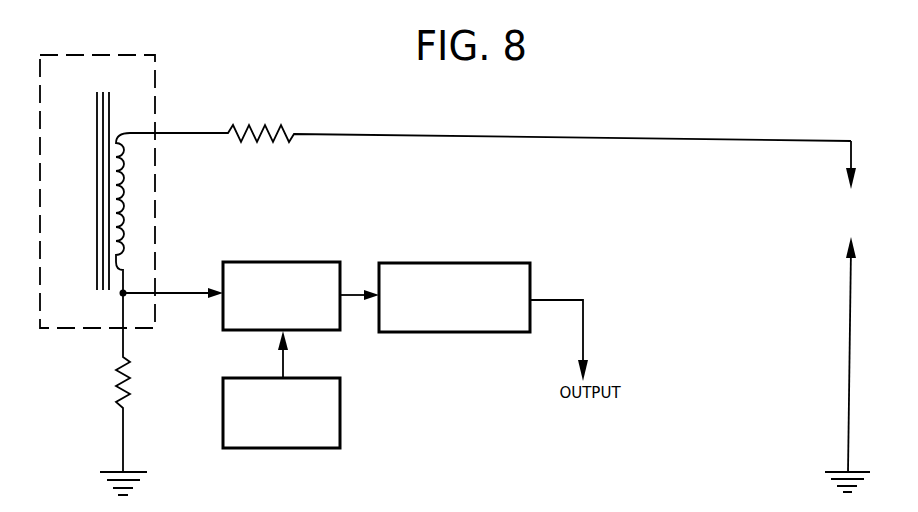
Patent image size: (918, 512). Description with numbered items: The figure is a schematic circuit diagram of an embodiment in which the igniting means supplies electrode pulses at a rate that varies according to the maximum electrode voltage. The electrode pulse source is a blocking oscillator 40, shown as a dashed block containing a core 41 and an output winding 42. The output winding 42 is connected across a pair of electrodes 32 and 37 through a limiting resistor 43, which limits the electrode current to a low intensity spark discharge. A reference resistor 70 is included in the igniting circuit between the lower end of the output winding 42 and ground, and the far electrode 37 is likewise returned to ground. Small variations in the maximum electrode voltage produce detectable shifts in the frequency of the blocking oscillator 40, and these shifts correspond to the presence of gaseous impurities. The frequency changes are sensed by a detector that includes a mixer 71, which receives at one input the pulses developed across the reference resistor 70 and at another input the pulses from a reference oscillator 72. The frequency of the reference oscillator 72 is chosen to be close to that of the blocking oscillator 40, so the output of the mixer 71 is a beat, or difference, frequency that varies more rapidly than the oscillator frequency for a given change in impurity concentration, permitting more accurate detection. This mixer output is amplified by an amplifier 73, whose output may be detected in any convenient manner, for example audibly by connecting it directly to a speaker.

The blocking oscillator 40 is at (100, 55).
The magnetic core 41 is at (121, 116).
The output winding 42 is at (134, 207).
The limiting resistor 43 is at (270, 128).
The electrode 32 is at (846, 186).
The electrode 37 is at (846, 255).
The reference resistor 70 is at (131, 378).
The mixer 71 is at (284, 268).
The reference oscillator 72 is at (340, 418).
The amplifier 73 is at (455, 270).